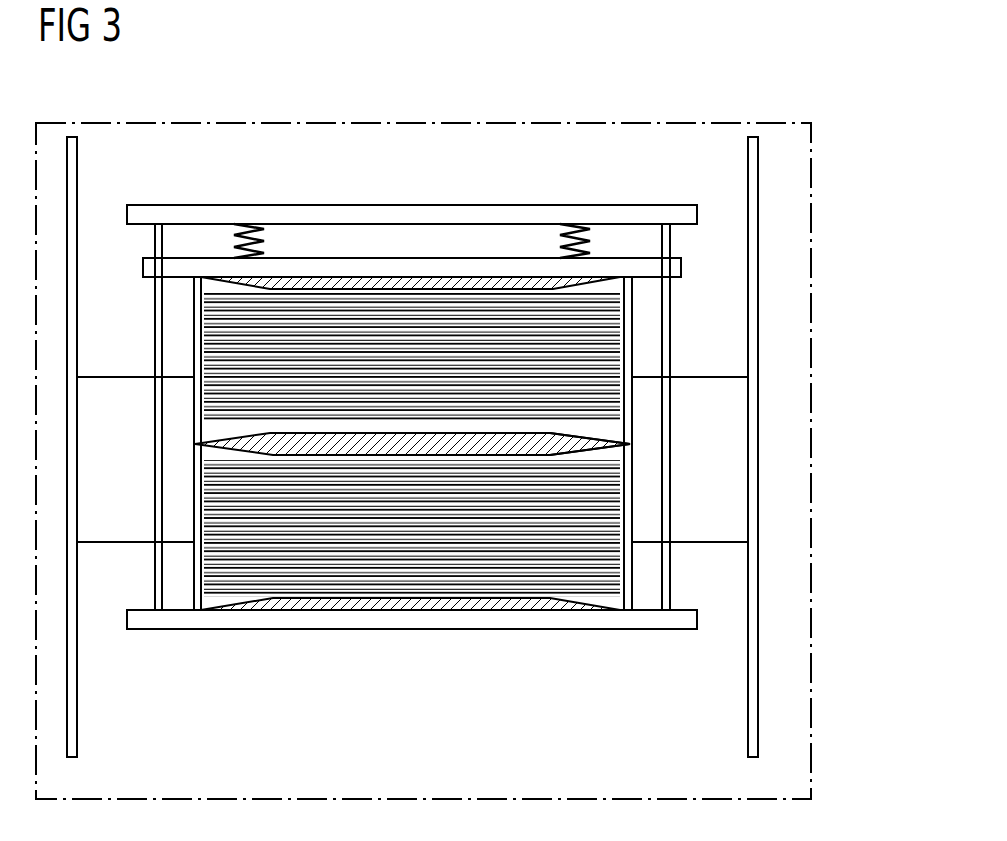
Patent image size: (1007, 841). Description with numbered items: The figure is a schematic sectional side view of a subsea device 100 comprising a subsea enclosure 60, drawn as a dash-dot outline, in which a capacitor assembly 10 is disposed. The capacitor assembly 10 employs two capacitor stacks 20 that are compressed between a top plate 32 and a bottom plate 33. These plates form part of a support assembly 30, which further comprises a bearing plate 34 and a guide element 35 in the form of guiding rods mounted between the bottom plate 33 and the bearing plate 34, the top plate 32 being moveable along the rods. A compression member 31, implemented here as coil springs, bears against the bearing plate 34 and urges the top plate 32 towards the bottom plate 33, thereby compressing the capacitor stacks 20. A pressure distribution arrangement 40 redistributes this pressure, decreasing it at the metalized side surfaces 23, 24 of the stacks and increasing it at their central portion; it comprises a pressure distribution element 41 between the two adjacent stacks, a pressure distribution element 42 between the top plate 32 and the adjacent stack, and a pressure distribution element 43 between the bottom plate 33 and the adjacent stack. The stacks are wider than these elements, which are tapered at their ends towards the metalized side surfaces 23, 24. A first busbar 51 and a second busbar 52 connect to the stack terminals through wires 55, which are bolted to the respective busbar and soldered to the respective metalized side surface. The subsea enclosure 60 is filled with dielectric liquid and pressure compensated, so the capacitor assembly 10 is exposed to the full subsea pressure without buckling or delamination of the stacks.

The subsea device 100 is at (725, 103).
The capacitor assembly 10 is at (412, 439).
The capacitor stacks 20 is at (331, 315).
The metalized side surface 23 is at (178, 312).
The metalized side surface 24 is at (628, 320).
The support assembly 30 is at (697, 197).
The compression member 31 is at (255, 235).
The top plate 32 is at (401, 268).
The bottom plate 33 is at (345, 630).
The bearing plate 34 is at (498, 213).
The guide element 35 is at (160, 456).
The pressure distribution arrangement 40 is at (248, 278).
The pressure distribution element 41 is at (582, 445).
The pressure distribution element 42 is at (453, 282).
The pressure distribution element 43 is at (414, 603).
The first busbar 51 is at (77, 730).
The second busbar 52 is at (748, 740).
The wires 55 is at (98, 377).
The subsea enclosure 60 is at (477, 123).